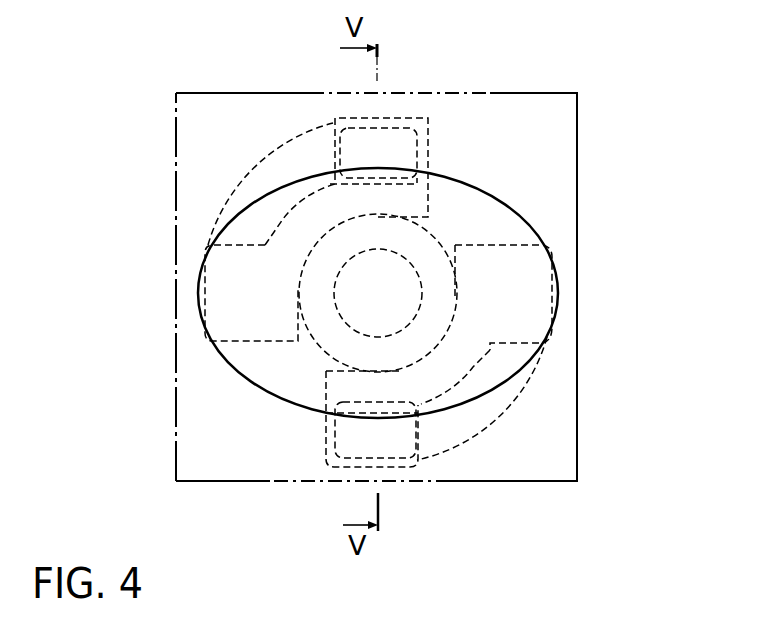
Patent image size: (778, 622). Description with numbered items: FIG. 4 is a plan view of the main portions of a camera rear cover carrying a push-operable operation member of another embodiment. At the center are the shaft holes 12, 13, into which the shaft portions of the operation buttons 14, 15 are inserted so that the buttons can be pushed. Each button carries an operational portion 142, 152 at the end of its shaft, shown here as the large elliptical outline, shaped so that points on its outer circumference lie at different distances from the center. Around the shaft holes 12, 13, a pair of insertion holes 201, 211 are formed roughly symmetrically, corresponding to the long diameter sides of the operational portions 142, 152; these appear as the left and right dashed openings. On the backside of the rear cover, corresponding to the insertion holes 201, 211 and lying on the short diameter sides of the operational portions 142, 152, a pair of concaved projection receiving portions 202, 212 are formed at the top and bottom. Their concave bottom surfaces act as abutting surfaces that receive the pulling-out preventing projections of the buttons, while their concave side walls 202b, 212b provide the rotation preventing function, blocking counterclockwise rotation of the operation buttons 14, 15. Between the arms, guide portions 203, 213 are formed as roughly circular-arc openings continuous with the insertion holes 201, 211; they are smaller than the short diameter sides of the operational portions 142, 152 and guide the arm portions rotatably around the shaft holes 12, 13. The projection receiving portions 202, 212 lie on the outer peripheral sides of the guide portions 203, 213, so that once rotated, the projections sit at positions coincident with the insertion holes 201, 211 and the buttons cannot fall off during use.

The shaft hole 12 is at (482, 293).
The shaft hole 13 is at (405, 305).
The operation button 14 is at (434, 287).
The operation button 15 is at (434, 287).
The operational portion 142 is at (434, 287).
The operational portion 152 is at (518, 217).
The insertion hole 201 is at (377, 297).
The insertion hole 211 is at (215, 306).
The projection receiving portion 202 is at (365, 296).
The projection receiving portion 212 is at (365, 296).
The concave side wall 202b is at (277, 296).
The concave side wall 212b is at (423, 118).
The guide portion 203 is at (377, 291).
The guide portion 213 is at (297, 221).